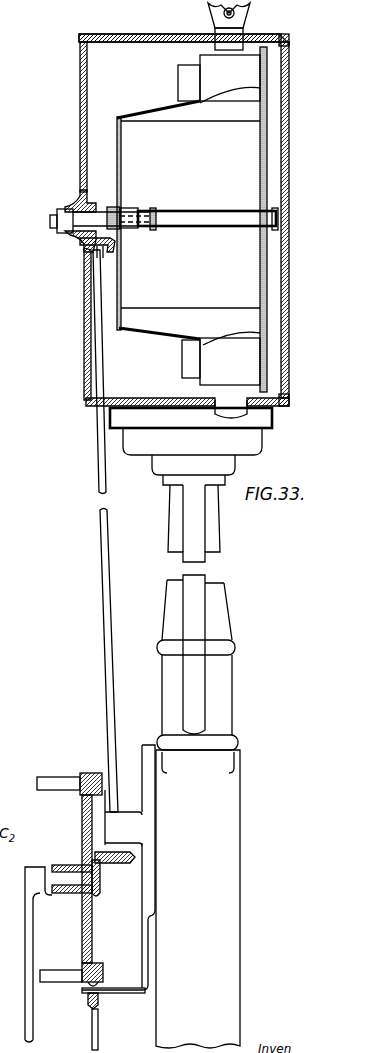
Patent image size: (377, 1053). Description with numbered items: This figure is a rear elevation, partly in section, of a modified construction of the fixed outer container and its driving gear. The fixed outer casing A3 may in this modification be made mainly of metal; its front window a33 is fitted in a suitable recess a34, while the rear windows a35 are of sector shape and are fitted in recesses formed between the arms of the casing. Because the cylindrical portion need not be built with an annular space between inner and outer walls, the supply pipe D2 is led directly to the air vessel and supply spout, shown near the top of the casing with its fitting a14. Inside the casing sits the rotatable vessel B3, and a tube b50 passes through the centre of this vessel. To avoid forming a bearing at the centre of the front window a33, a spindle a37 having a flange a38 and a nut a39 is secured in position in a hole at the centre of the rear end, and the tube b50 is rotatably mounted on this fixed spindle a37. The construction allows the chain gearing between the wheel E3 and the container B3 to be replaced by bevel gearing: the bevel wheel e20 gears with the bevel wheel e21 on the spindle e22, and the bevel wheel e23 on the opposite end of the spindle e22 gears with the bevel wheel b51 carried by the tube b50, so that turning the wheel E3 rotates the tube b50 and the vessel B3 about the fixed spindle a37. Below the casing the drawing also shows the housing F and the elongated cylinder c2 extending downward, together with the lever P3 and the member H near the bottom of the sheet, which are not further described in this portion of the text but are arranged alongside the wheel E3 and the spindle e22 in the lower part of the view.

The fixed outer casing A3 is at (104, 36).
The inlet nozzle a14 is at (214, 14).
The supply pipe D2 is at (252, 13).
The recess a34 is at (291, 38).
The rear windows a35 is at (79, 111).
The front window a33 is at (291, 168).
The vessel B3 is at (147, 109).
The spindle a37 is at (103, 210).
The bevel wheel b51 is at (121, 206).
The tube b50 is at (190, 210).
The flange a38 is at (84, 197).
The nut a39 is at (66, 237).
The bevel wheel e23 is at (116, 246).
The burner housing F is at (248, 441).
The spindle e22 is at (103, 528).
The cylinder c2 is at (243, 880).
The wheel E3 is at (80, 812).
The bevel wheel e21 is at (130, 866).
The bevel wheel e20 is at (104, 895).
The lever P3 is at (35, 1024).
The valve H is at (100, 1020).